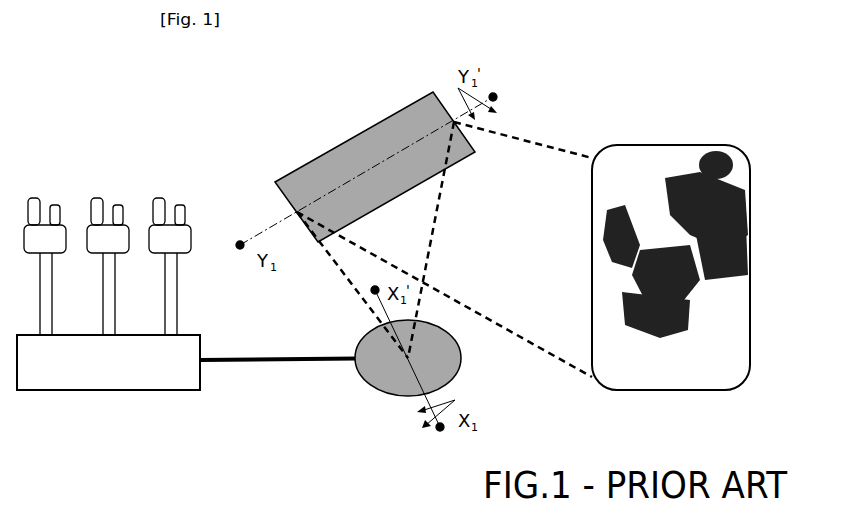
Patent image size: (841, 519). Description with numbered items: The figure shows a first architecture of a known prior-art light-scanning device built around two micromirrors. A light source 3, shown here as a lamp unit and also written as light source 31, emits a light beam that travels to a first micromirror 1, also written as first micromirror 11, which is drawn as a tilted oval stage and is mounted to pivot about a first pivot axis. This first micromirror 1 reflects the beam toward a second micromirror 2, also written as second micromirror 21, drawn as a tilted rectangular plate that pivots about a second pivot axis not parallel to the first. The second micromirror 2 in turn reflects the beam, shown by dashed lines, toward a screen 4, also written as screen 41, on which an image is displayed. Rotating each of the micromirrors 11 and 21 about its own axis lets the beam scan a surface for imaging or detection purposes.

The first micromirror 1 is at (397, 393).
The first micromirror 11 is at (380, 387).
The second micromirror 2 is at (375, 156).
The second micromirror 21 is at (367, 137).
The light source 3 is at (108, 327).
The light source 31 is at (70, 378).
The screen 4 is at (671, 301).
The screen 41 is at (687, 390).